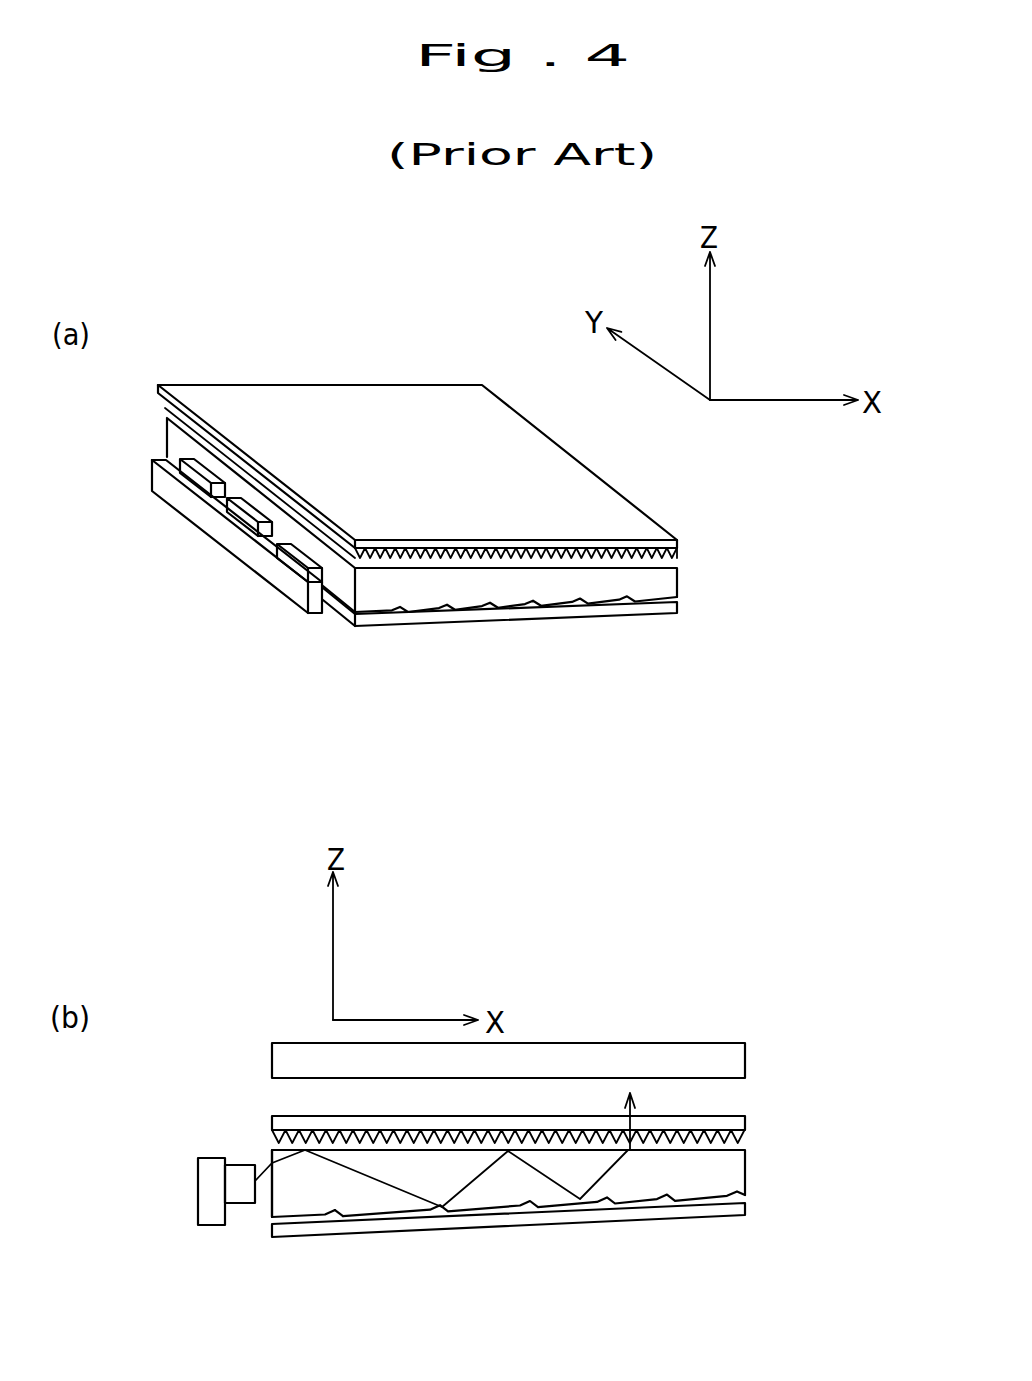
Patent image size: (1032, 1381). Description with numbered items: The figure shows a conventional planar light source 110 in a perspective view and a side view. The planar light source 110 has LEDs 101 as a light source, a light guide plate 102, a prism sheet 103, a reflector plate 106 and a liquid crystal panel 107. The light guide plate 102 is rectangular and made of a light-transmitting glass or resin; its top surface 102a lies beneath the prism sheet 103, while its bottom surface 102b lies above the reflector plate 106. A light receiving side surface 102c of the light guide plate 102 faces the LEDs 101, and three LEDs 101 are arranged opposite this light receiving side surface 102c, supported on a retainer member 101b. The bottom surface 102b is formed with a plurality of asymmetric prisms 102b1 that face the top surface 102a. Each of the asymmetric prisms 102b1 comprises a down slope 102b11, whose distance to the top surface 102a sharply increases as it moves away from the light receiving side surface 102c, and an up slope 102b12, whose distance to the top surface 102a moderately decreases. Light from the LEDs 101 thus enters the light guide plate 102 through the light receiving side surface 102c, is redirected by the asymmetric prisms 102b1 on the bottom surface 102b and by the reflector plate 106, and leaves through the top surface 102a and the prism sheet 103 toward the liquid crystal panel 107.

The planar light source 110 is at (403, 343).
The LEDs 101 is at (220, 510).
The retainer member 101b is at (257, 556).
The light guide plate 102 is at (678, 584).
The top surface 102a is at (677, 562).
The bottom surface 102b is at (420, 605).
The asymmetric prisms 102b1 is at (417, 1277).
The down slope 102b11 is at (303, 1217).
The up slope 102b12 is at (335, 1212).
The light receiving side surface 102c is at (348, 592).
The prism sheet 103 is at (550, 465).
The reflector plate 106 is at (603, 618).
The liquid crystal panel 107 is at (700, 1043).